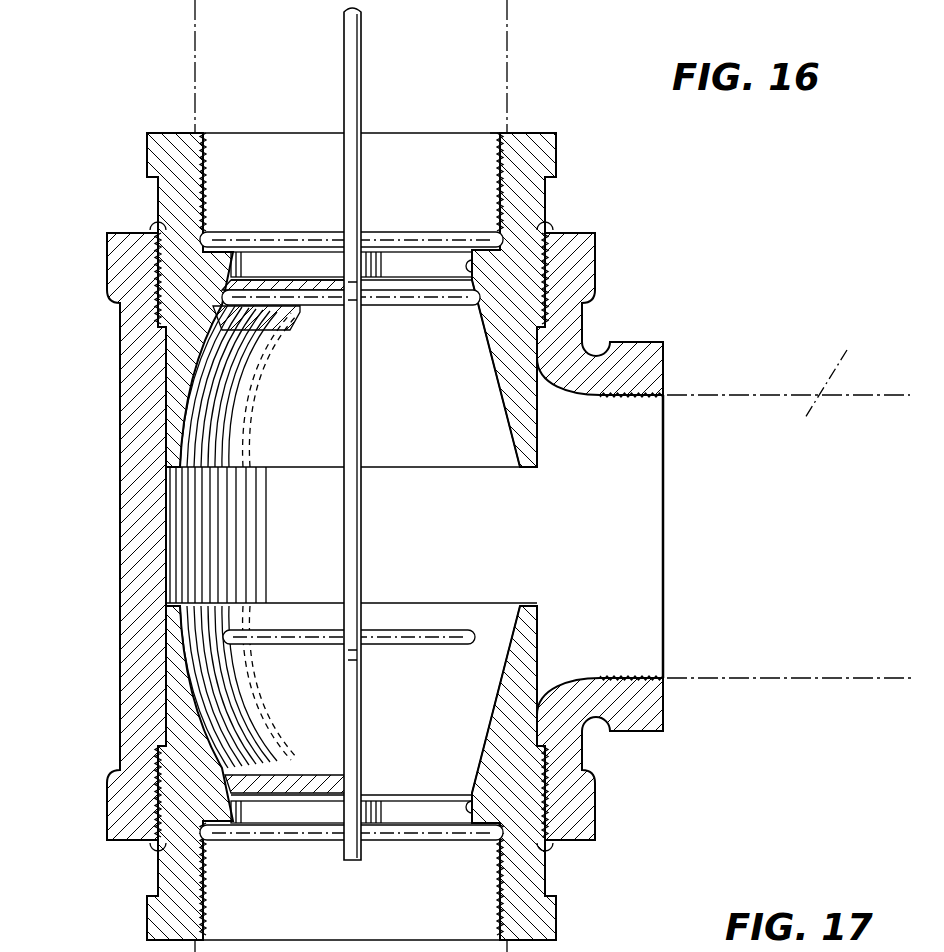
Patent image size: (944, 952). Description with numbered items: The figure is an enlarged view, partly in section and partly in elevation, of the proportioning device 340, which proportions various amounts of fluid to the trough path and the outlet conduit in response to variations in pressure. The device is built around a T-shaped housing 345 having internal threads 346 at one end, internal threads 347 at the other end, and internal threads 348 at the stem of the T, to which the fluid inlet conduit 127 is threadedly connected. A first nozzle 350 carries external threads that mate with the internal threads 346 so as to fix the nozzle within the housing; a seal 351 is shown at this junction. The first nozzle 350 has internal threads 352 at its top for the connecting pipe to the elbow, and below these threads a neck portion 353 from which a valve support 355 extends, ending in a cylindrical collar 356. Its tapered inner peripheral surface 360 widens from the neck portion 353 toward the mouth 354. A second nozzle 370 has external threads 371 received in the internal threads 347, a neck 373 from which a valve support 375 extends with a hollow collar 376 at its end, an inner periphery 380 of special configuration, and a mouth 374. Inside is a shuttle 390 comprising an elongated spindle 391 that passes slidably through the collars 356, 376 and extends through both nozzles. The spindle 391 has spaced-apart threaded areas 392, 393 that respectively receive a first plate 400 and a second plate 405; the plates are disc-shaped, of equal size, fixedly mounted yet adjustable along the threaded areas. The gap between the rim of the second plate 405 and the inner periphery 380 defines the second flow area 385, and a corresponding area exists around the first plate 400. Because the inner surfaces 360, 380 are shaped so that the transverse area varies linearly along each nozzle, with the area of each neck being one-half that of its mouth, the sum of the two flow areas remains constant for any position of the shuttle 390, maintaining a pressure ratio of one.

The fluid inlet conduit 127 is at (843, 367).
The proportioning device 340 is at (287, 476).
The T-shaped housing 345 is at (338, 536).
The internal threads 346 is at (155, 226).
The internal threads 347 is at (546, 853).
The internal threads 348 is at (656, 400).
The first nozzle 350 is at (409, 298).
The seal ring 351 is at (548, 230).
The internal threads 352 is at (500, 128).
The neck portion 353 is at (474, 268).
The mouth 354 is at (520, 470).
The valve support 355 is at (262, 262).
The cylindrical collar 356 is at (382, 264).
The tapered inner peripheral surface 360 is at (509, 406).
The second nozzle 370 is at (401, 773).
The external threads 371 is at (150, 852).
The neck 373 is at (470, 798).
The mouth 374 is at (528, 603).
The valve support 375 is at (268, 815).
The hollow collar 376 is at (383, 812).
The inner periphery 380 is at (499, 708).
The second flow area 385 is at (192, 632).
The shuttle 390 is at (443, 544).
The elongated spindle 391 is at (346, 512).
The threaded area 392 is at (360, 314).
The threaded area 393 is at (360, 652).
The first plate 400 is at (285, 302).
The second plate 405 is at (442, 634).